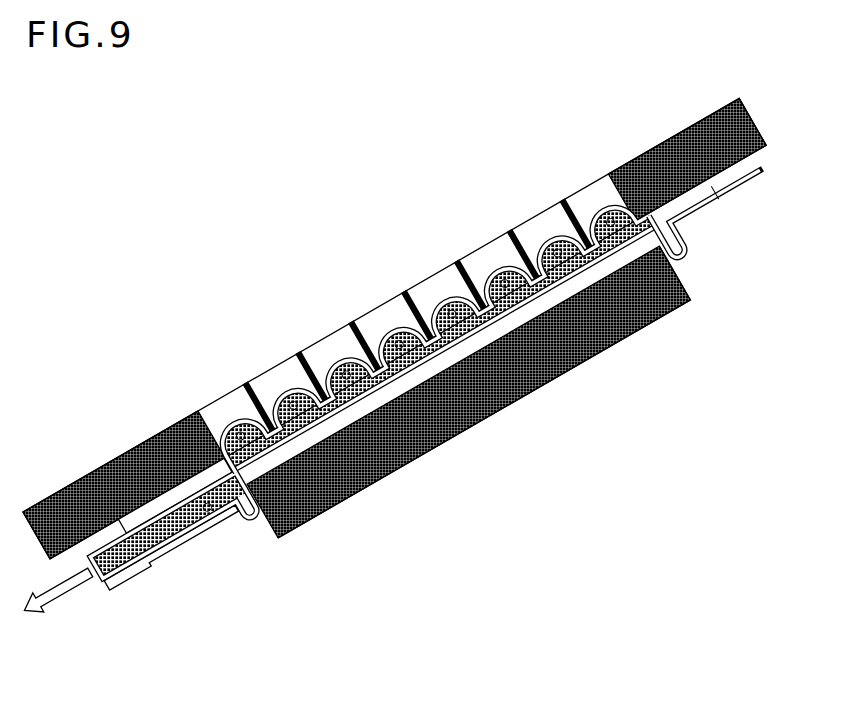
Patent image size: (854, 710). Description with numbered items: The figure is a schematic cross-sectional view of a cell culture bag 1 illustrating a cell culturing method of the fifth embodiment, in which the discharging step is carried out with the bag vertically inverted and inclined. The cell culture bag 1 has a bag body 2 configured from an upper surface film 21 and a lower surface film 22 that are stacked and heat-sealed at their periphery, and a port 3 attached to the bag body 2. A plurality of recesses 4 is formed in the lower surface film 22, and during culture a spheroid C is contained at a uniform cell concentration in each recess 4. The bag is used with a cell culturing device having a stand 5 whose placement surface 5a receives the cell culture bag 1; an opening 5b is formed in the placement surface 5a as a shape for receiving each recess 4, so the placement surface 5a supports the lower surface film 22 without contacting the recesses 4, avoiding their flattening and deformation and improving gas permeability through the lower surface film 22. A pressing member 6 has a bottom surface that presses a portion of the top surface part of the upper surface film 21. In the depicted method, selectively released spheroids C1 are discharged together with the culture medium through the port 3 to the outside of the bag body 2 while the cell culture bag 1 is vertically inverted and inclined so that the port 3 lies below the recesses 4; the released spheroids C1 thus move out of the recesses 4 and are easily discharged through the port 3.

The cell culture bag 1 is at (384, 455).
The bag body 2 is at (172, 548).
The port 3 is at (117, 562).
The recess 4 is at (497, 267).
The stand 5 is at (683, 130).
The placement surface 5a is at (70, 556).
The opening 5b is at (388, 325).
The pressing member 6 is at (648, 335).
The upper surface film 21 is at (518, 400).
The lower surface film 22 is at (713, 190).
The spheroid C is at (350, 368).
The selectively released spheroid C1 is at (207, 492).